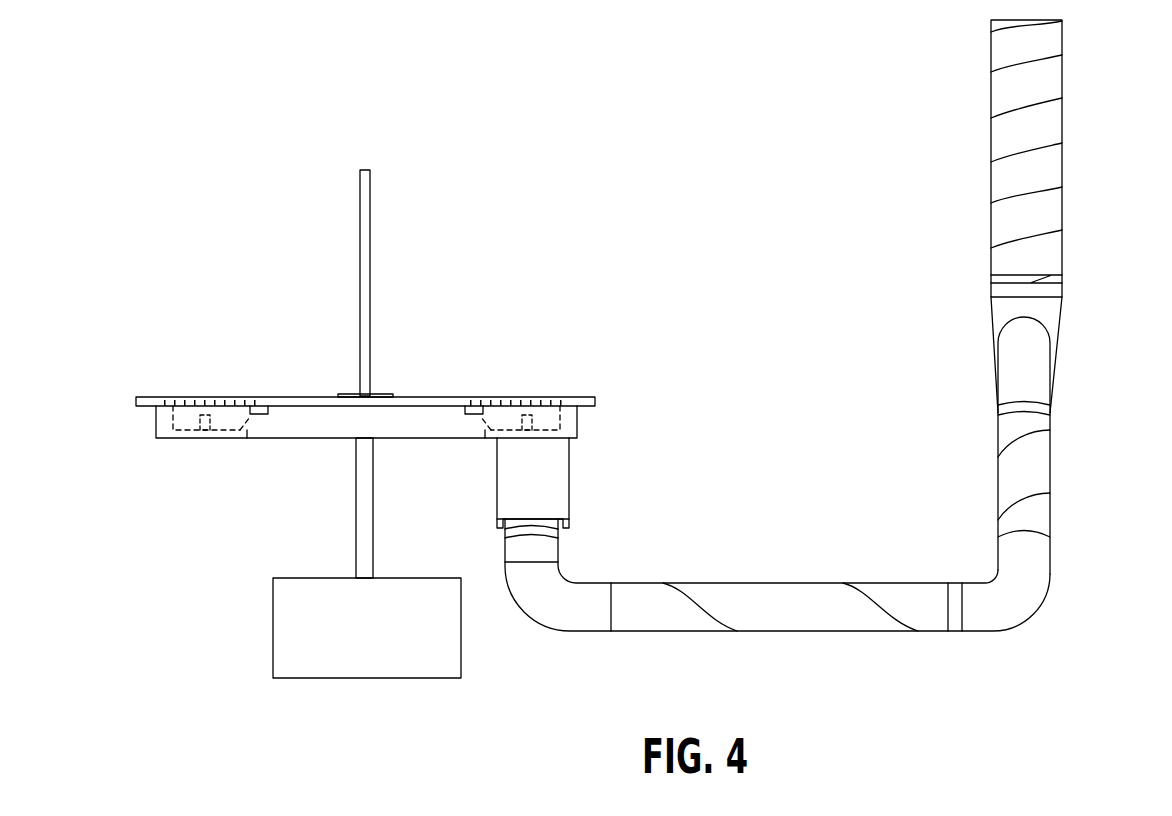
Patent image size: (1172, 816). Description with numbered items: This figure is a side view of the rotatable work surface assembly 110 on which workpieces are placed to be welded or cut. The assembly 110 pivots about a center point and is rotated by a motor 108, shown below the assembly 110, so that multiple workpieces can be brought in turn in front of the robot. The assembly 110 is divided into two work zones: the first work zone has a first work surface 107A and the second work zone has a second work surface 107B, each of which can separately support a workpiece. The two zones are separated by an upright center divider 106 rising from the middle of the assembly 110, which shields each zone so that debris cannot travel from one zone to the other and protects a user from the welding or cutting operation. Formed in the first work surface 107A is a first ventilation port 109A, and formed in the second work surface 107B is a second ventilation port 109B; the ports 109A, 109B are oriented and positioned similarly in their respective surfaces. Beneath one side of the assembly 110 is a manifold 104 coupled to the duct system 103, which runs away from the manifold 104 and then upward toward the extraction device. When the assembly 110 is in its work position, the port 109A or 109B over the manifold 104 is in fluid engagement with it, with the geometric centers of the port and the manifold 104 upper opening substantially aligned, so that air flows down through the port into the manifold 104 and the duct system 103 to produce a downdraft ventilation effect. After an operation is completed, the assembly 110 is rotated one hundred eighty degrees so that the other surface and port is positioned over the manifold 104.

The duct system 103 is at (1063, 112).
The manifold 104 is at (569, 472).
The center divider 106 is at (370, 203).
The first work surface 107A is at (303, 398).
The second work surface 107B is at (430, 398).
The motor 108 is at (445, 645).
The first ventilation port 109A is at (185, 398).
The second ventilation port 109B is at (556, 398).
The work surface assembly 110 is at (505, 238).